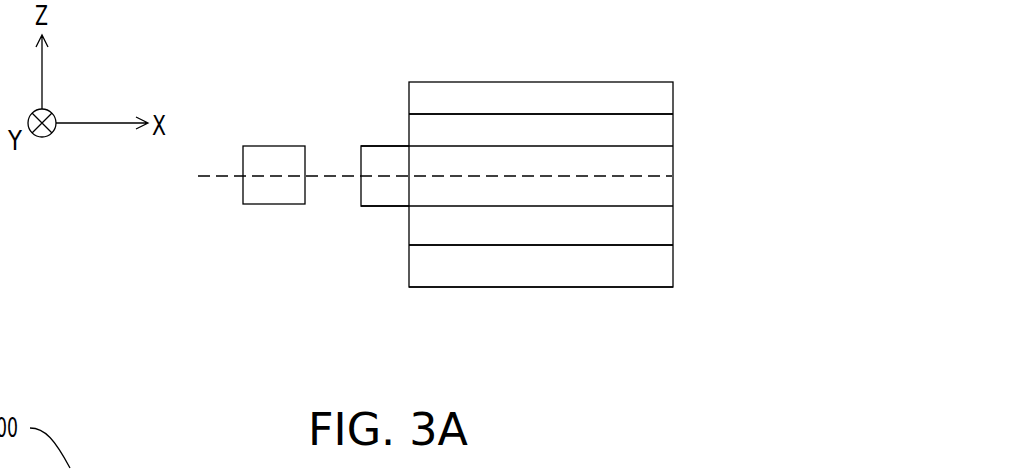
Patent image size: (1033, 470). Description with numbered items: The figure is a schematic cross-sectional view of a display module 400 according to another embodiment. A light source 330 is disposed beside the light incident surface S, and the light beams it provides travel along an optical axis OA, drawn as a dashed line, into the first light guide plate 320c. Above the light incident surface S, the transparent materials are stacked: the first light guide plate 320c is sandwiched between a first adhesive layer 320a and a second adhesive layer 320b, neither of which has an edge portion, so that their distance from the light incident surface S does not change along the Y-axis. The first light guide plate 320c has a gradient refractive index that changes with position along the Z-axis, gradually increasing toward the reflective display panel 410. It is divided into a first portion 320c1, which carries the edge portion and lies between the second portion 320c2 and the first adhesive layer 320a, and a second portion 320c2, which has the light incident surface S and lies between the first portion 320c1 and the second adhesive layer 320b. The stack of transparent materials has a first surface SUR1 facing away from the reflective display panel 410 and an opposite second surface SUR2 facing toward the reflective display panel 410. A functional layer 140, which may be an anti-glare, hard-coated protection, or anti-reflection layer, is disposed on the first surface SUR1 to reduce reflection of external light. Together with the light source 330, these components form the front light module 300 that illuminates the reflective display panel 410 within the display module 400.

The front light module 300 is at (343, 85).
The light source 330 is at (270, 204).
The light incident surface S is at (352, 193).
The optical axis OA is at (418, 179).
The first portion 320c1 is at (389, 155).
The second portion 320c2 is at (390, 199).
The first light guide plate 320c is at (683, 148).
The first adhesive layer 320a is at (662, 135).
The second adhesive layer 320b is at (662, 225).
The functional layer 140 is at (640, 97).
The first surface SUR1 is at (660, 110).
The second surface SUR2 is at (643, 249).
The reflective display panel 410 is at (565, 272).
The display module 400 is at (752, 348).